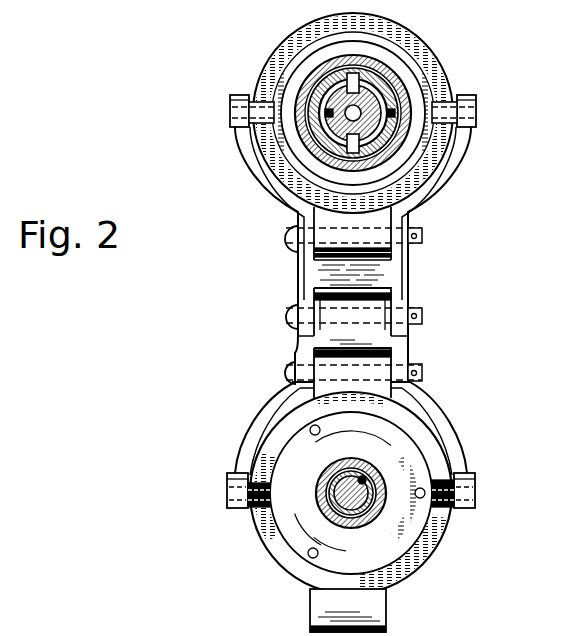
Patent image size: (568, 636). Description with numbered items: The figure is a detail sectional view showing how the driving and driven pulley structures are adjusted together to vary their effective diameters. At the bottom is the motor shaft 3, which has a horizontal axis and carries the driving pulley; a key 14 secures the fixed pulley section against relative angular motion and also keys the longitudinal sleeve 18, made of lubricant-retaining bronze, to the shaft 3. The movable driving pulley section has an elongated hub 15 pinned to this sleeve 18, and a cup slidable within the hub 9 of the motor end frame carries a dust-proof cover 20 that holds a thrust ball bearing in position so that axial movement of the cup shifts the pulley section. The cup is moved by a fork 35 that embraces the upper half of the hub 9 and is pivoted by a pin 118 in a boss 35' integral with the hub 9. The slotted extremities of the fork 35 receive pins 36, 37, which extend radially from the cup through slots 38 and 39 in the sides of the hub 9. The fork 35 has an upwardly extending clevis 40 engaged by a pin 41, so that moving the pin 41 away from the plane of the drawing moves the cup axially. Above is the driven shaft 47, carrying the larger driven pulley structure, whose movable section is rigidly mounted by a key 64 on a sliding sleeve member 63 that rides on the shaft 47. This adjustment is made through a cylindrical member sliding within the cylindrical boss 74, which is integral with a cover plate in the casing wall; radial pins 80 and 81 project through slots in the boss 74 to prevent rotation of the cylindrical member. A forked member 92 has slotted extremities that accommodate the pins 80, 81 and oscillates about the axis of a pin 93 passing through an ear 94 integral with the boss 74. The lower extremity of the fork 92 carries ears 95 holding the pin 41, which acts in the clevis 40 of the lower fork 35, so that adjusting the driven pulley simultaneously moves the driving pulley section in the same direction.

The motor shaft 3 is at (320, 475).
The hub 9 is at (423, 553).
The key 14 is at (364, 478).
The elongated hub 15 is at (388, 478).
The longitudinal sleeve 18 is at (323, 511).
The dust-proof cover 20 is at (380, 473).
The fork 35 is at (385, 462).
The boss 35' is at (389, 363).
The pin 36 is at (253, 508).
The pin 37 is at (447, 508).
The slot 38 is at (473, 490).
The slot 39 is at (228, 492).
The clevis 40 is at (400, 338).
The pin 41 is at (421, 310).
The driven shaft 47 is at (395, 75).
The sliding sleeve member 63 is at (410, 88).
The key 64 is at (292, 98).
The cylindrical boss 74 is at (272, 159).
The radial pin 80 is at (468, 112).
The radial pin 81 is at (250, 110).
The forked member 92 is at (460, 170).
The pin 93 is at (423, 236).
The ear 94 is at (315, 255).
The ears 95 is at (300, 325).
The pin 118 is at (423, 367).